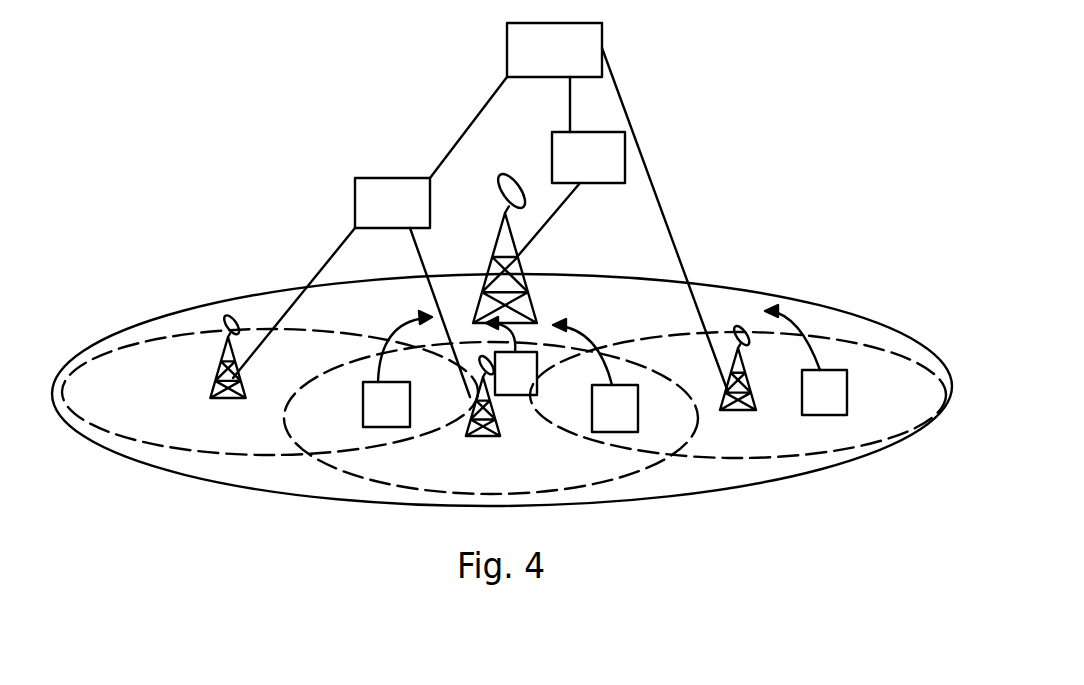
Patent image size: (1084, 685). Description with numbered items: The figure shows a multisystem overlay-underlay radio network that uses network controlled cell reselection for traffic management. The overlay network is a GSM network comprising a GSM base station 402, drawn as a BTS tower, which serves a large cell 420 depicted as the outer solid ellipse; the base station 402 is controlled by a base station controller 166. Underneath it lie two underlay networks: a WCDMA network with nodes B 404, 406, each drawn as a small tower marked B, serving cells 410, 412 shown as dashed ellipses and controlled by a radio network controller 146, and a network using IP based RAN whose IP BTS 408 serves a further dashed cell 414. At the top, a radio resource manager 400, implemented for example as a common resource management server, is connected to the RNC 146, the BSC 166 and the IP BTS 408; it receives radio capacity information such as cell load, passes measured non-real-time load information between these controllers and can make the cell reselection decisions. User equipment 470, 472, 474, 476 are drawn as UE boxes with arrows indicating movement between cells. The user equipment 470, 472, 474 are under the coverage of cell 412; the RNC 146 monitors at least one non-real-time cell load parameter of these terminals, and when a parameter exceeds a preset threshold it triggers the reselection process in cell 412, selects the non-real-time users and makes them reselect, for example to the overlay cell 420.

The radio resource manager 400 is at (507, 42).
The base station controller 166 is at (550, 162).
The radio network controller 146 is at (432, 202).
The GSM base station 402 is at (527, 257).
The node B 404 is at (222, 370).
The node B 406 is at (497, 407).
The IP BTS 408 is at (747, 383).
The cell 410 is at (340, 333).
The cell 412 is at (387, 490).
The cell 414 is at (680, 337).
The cell 420 is at (743, 283).
The user equipment 470 is at (410, 405).
The user equipment 472 is at (537, 367).
The user equipment 474 is at (613, 432).
The user equipment 476 is at (823, 415).